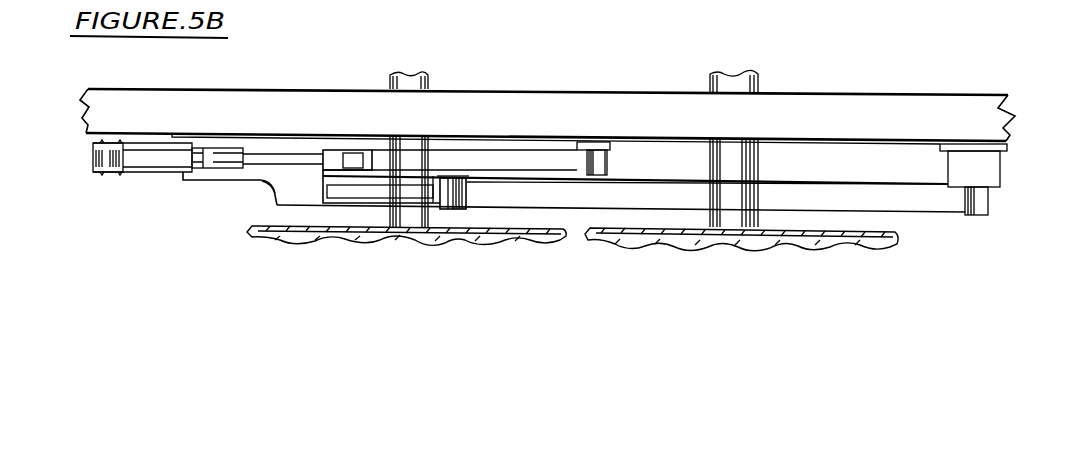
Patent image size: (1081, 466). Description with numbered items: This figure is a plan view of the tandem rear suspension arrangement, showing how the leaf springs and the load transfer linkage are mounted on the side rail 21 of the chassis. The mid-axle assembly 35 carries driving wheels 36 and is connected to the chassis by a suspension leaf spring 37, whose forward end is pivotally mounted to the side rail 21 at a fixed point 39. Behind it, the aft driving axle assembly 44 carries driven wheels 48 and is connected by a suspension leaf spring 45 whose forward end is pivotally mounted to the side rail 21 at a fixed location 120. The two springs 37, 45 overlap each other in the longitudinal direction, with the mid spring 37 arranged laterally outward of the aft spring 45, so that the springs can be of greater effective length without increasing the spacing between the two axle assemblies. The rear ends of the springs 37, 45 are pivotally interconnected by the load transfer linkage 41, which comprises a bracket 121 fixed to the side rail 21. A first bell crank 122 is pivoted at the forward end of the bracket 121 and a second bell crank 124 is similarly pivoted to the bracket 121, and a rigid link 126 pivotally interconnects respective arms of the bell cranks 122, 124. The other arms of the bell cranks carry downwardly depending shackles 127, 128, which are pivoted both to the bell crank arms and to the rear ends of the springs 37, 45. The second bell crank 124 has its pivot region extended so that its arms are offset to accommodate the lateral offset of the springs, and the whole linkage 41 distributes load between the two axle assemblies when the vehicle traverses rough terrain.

The side rail 21 is at (829, 113).
The mid-axle assembly 35 is at (755, 170).
The driving wheels 36 is at (891, 251).
The suspension leaf spring 37 is at (939, 214).
The forward end 39 is at (993, 225).
The load transfer linkage 41 is at (228, 199).
The aft driving axle assembly 44 is at (424, 85).
The suspension leaf spring 45 is at (504, 145).
The driven wheels 48 is at (258, 231).
The fixed location 120 is at (607, 174).
The bracket 121 is at (276, 195).
The first bell crank 122 is at (165, 178).
The second bell crank 124 is at (381, 206).
The rigid link 126 is at (283, 152).
The shackle 127 is at (110, 182).
The shackle 128 is at (445, 212).